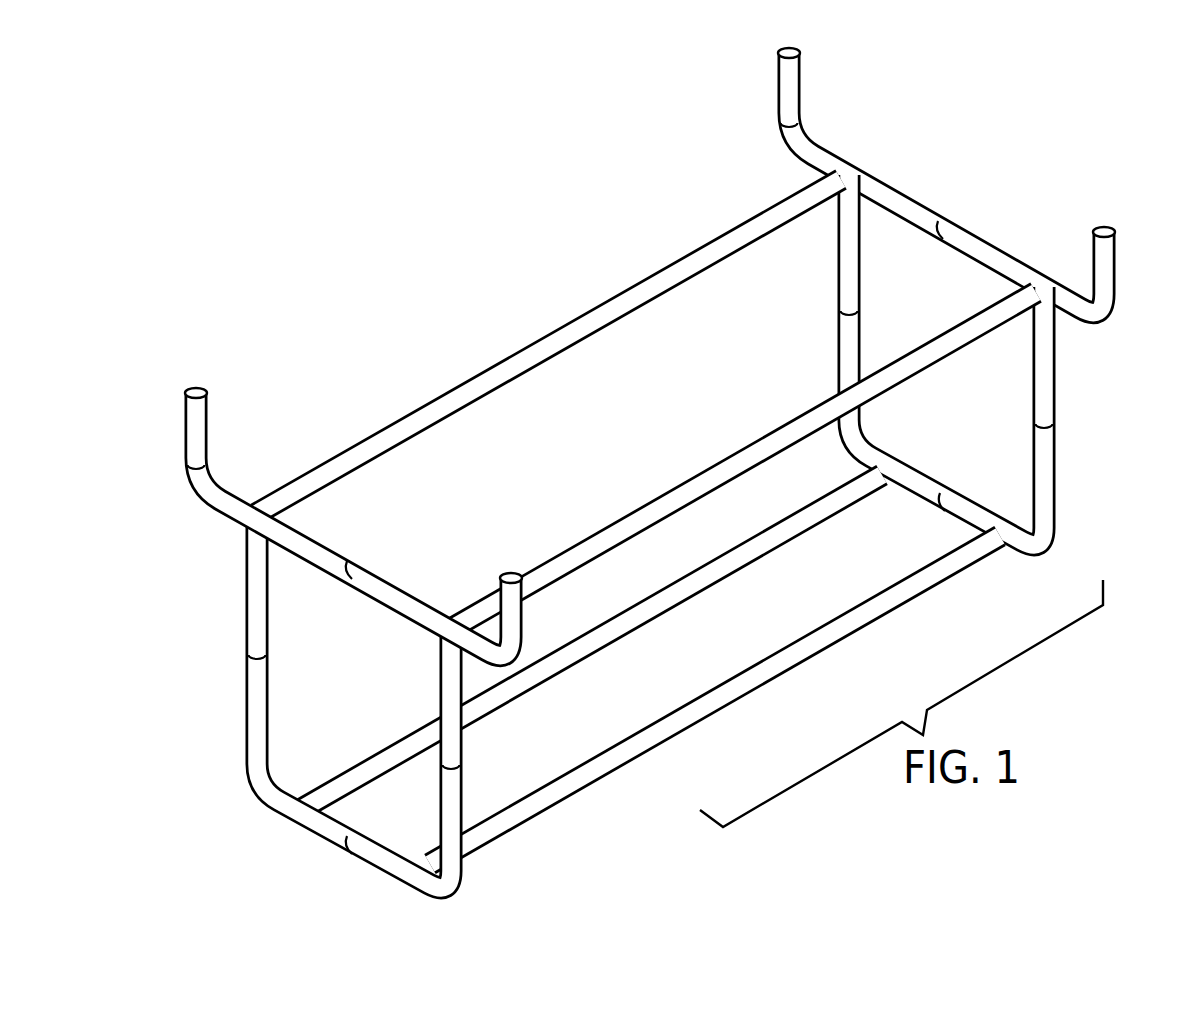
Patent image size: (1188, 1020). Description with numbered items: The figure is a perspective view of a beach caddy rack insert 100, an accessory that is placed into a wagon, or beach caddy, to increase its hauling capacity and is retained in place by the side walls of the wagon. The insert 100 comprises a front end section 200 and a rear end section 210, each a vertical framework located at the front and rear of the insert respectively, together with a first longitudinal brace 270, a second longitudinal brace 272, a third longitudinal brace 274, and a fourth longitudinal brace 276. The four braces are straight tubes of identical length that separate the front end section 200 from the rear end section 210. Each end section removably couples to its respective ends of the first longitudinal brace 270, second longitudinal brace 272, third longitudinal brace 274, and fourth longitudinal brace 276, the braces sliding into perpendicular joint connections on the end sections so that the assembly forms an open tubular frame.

The beach caddy rack insert 100 is at (652, 475).
The front end section 200 is at (629, 554).
The rear end section 210 is at (1132, 213).
The first longitudinal brace 270 is at (510, 818).
The second longitudinal brace 272 is at (353, 783).
The third longitudinal brace 274 is at (733, 467).
The fourth longitudinal brace 276 is at (494, 364).